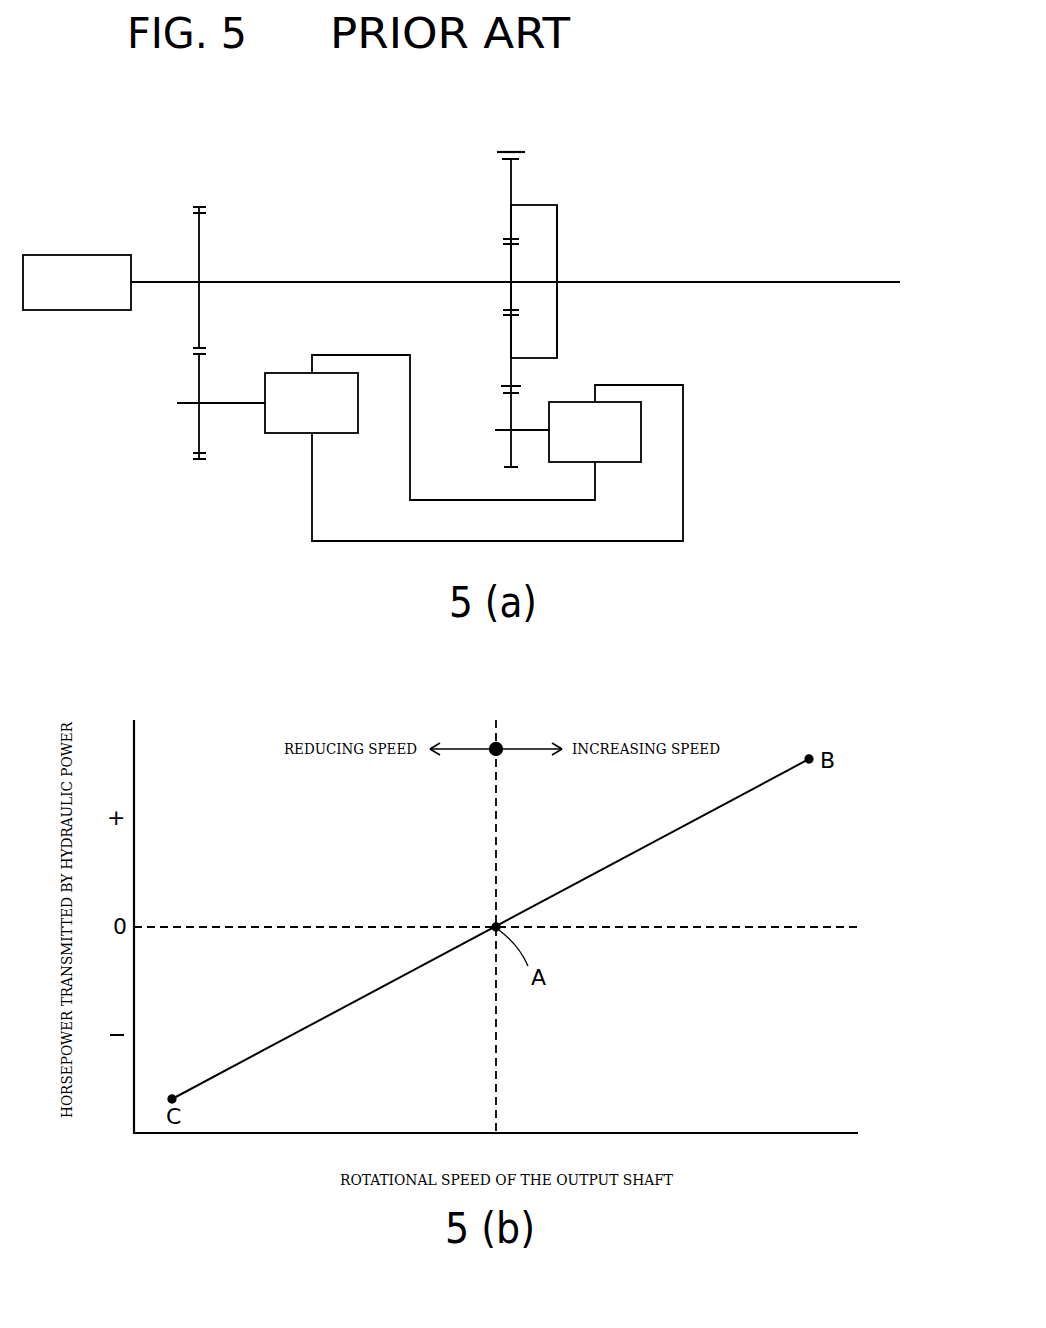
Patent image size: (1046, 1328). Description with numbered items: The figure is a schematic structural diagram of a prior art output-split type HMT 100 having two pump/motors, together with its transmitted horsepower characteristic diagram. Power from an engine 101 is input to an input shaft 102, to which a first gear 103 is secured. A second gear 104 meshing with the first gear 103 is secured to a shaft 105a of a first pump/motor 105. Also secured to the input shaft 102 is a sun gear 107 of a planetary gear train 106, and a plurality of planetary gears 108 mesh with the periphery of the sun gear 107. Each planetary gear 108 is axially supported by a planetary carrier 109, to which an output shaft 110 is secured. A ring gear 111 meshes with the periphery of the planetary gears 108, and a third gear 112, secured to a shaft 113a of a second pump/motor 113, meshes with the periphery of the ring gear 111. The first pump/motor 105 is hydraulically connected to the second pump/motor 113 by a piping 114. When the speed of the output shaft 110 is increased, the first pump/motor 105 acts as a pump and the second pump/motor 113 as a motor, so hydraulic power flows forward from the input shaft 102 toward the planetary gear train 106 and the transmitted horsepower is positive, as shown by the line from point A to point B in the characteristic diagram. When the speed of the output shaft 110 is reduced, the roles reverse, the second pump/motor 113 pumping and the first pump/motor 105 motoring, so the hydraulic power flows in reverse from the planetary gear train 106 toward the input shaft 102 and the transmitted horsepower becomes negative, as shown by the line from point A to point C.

The output-split type HMT 100 is at (607, 137).
The engine 101 is at (54, 310).
The input shaft 102 is at (155, 282).
The first gear 103 is at (200, 238).
The second gear 104 is at (197, 434).
The first pump/motor 105 is at (275, 433).
The shaft of the first pump/motor 105a is at (185, 403).
The planetary gear train 106 is at (563, 263).
The sun gear 107 is at (510, 270).
The planetary gears 108 is at (511, 185).
The planetary carrier 109 is at (557, 327).
The output shaft 110 is at (834, 282).
The ring gear 111 is at (497, 152).
The third gear 112 is at (510, 448).
The second pump/motor 113 is at (625, 462).
The shaft of the second pump/motor 113a is at (533, 428).
The piping 114 is at (376, 541).